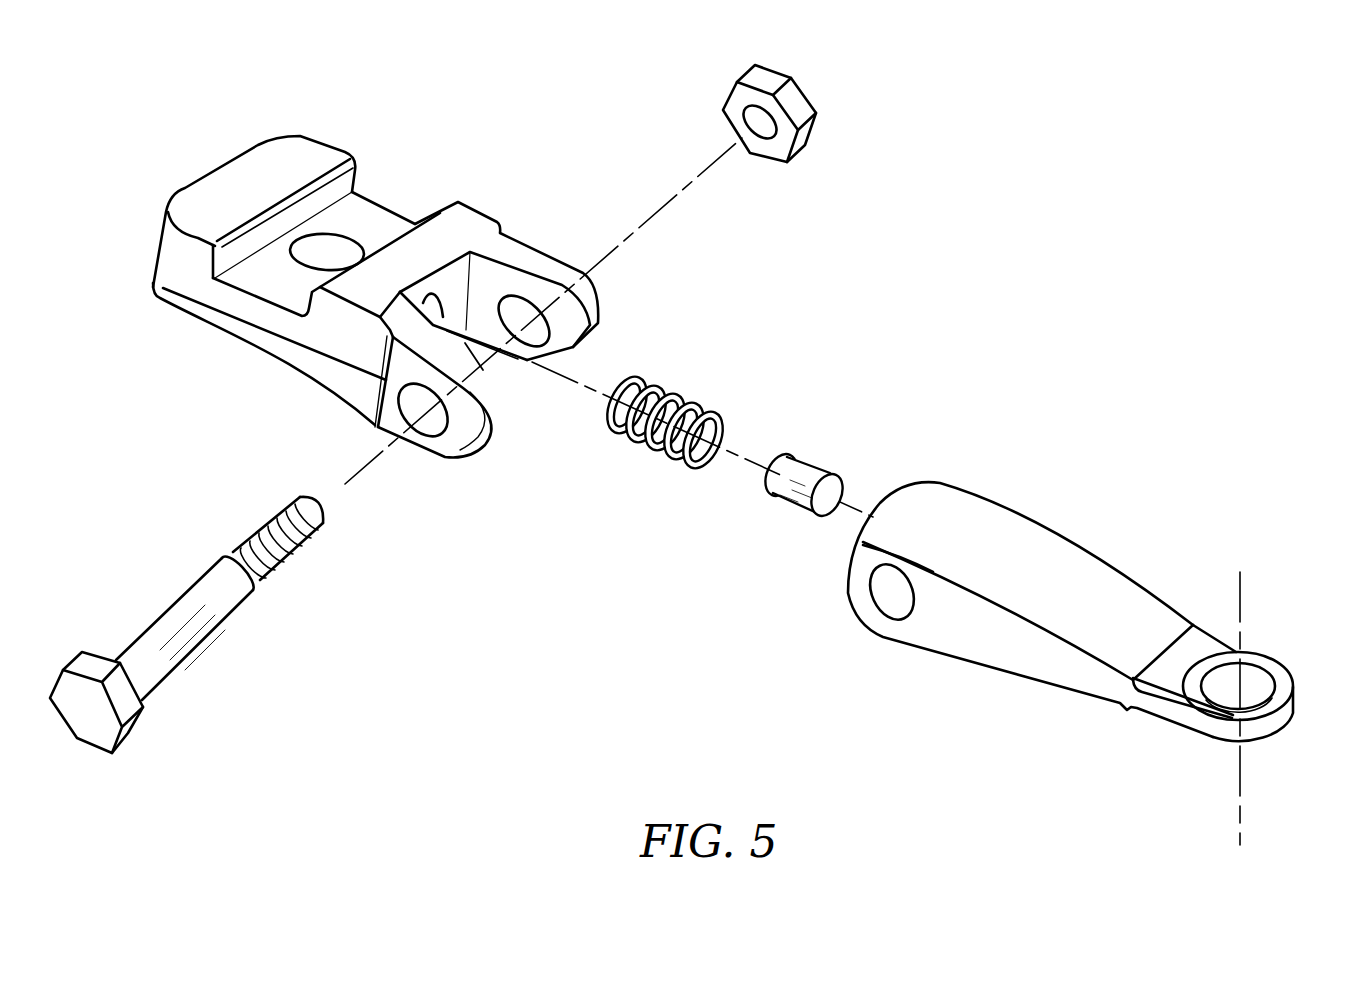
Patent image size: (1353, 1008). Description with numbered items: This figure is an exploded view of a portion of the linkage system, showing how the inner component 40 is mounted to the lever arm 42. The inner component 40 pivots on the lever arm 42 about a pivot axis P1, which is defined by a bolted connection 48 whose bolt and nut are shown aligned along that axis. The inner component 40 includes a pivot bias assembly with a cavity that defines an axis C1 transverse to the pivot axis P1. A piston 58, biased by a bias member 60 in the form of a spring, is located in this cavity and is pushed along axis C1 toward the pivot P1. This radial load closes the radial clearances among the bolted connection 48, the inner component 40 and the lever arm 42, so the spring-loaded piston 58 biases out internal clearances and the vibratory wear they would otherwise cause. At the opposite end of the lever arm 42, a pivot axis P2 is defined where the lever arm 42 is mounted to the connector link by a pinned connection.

The inner component 40 is at (467, 220).
The lever arm 42 is at (1073, 563).
The bolted connection 48 is at (188, 650).
The piston 58 is at (810, 473).
The bias member 60 is at (665, 390).
The pivot axis P1 is at (687, 183).
The axis C1 is at (753, 462).
The pivot axis P2 is at (1240, 606).